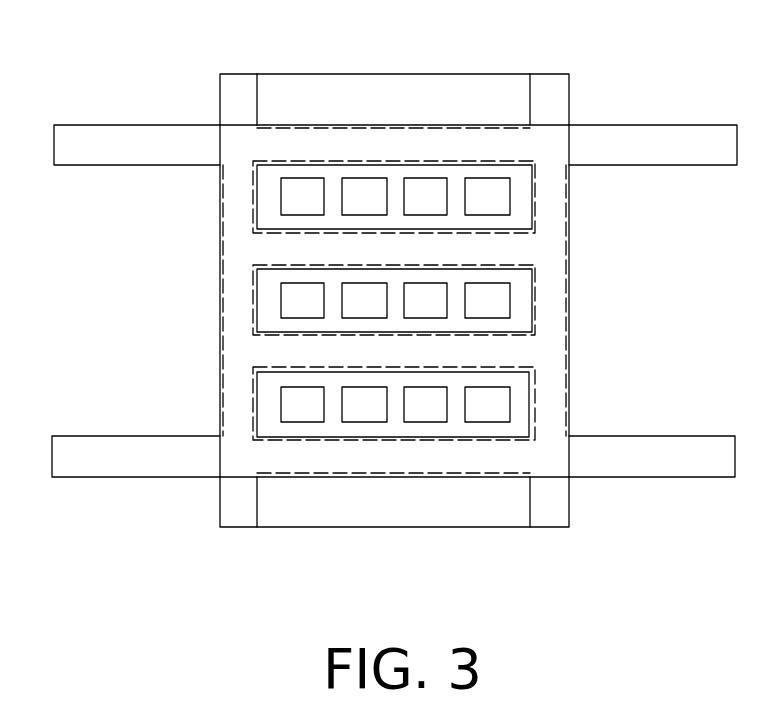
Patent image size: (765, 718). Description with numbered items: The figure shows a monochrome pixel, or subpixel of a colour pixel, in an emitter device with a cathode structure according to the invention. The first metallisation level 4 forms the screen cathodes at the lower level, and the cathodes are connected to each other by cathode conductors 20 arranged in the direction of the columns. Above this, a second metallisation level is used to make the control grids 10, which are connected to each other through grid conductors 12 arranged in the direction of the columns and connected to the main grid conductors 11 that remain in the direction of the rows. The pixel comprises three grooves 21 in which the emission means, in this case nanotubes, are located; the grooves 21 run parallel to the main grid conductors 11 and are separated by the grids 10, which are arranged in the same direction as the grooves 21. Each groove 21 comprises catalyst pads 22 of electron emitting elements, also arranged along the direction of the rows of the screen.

The first metallisation level 4 is at (450, 143).
The control grids 10 is at (520, 227).
The main grid conductors 11 is at (72, 152).
The grid conductors 12 is at (220, 258).
The cathode conductors 20 is at (553, 290).
The grooves 21 is at (517, 395).
The catalyst pads 22 is at (423, 197).